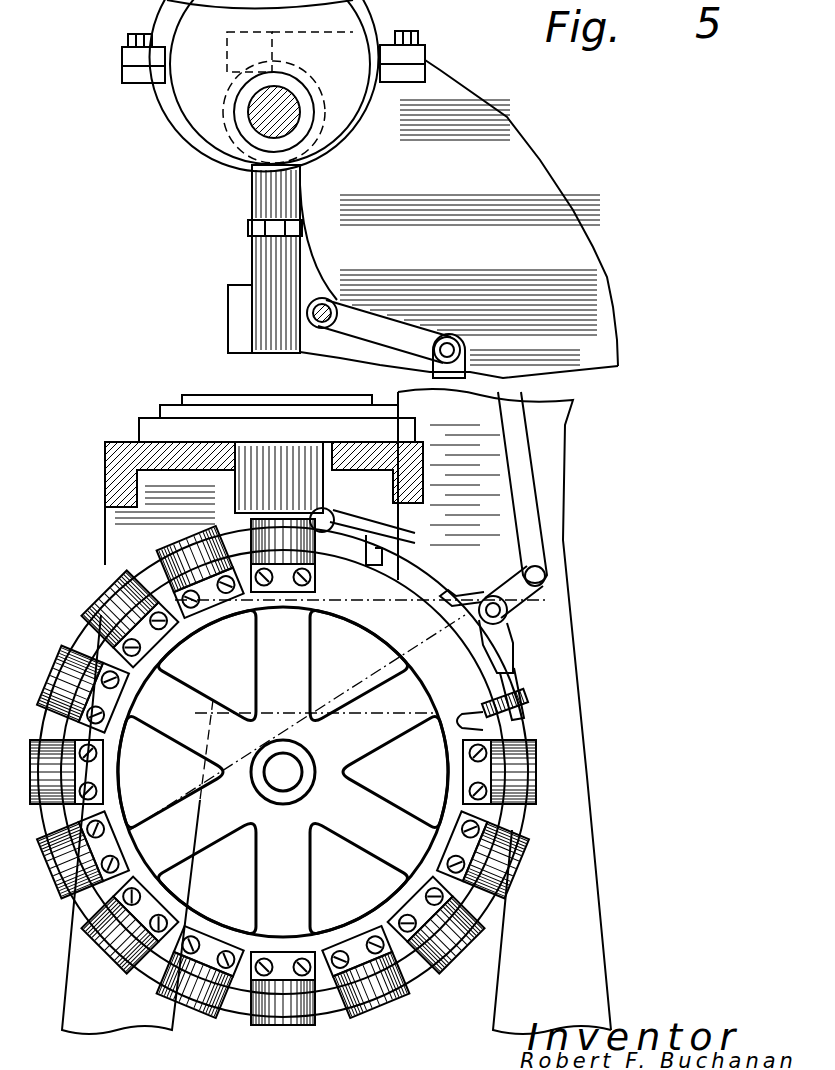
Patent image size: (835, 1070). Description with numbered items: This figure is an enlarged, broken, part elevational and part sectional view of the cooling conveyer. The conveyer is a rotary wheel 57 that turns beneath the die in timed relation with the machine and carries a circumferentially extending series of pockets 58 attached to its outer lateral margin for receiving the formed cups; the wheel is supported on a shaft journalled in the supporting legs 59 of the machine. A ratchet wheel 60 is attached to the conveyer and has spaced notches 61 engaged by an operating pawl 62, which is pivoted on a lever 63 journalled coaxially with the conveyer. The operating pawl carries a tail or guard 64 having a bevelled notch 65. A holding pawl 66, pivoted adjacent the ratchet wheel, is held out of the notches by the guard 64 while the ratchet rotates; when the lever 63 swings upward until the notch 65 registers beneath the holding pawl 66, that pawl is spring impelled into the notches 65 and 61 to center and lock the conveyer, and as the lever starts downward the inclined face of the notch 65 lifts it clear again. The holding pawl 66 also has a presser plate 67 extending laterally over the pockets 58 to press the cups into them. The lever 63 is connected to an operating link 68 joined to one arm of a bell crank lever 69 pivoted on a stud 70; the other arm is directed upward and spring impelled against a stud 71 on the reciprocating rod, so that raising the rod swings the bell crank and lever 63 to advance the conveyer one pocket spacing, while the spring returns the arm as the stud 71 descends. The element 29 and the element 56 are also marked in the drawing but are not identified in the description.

The shaft 29 is at (262, 130).
The nut 71 is at (250, 224).
The pivot pin 70 is at (332, 302).
The arm 69 is at (388, 330).
The link bar 68 is at (520, 465).
The pivot 66 is at (334, 518).
The link 64 is at (410, 576).
The pivot pin 63 is at (548, 578).
The pawl 61 is at (458, 598).
The pivot pin 62 is at (508, 610).
The stop 67 is at (372, 562).
The lever 60 is at (505, 690).
The link 65 is at (398, 648).
The pin 57 is at (485, 730).
The block 58 is at (522, 835).
The frame 59 is at (600, 940).
The shoe 56 is at (118, 608).